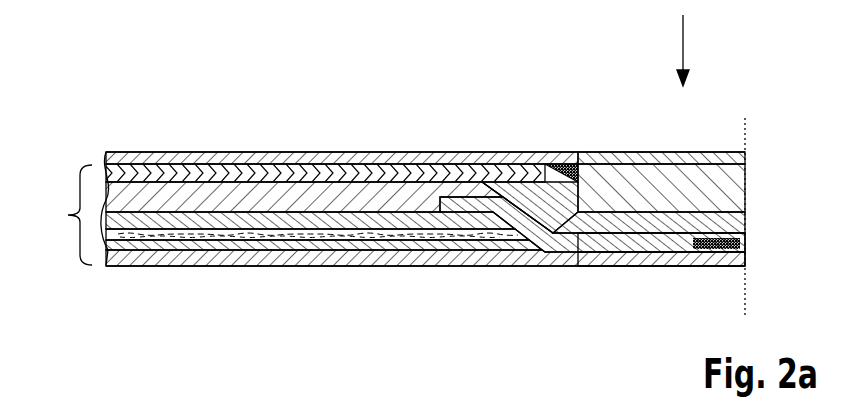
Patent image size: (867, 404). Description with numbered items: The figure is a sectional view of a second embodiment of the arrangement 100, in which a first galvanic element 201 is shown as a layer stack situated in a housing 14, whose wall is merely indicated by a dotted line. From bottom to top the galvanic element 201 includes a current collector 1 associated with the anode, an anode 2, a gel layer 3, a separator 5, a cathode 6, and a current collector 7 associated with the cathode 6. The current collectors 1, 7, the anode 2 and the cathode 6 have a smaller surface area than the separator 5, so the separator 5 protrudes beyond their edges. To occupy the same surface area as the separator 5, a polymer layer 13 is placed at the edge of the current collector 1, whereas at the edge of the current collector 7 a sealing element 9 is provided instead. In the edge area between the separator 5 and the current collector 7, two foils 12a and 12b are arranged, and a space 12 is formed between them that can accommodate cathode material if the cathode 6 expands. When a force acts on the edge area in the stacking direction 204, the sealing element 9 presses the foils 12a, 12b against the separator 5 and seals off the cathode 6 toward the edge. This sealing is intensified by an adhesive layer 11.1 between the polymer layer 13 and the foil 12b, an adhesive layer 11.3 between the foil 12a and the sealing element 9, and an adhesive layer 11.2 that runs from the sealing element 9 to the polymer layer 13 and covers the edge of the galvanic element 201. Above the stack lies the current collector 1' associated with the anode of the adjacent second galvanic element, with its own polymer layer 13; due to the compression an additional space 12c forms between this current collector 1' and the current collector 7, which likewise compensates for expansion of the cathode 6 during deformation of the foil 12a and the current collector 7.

The arrangement 100 is at (176, 80).
The current collector associated with the anode 1 is at (425, 283).
The current collector associated with the anode of the second galvanic element 1' is at (342, 127).
The anode 2 is at (298, 250).
The gel layer 3 is at (345, 240).
The separator 5 is at (445, 230).
The cathode 6 is at (178, 200).
The current collector associated with the cathode 7 is at (188, 182).
The sealing element 9 is at (745, 178).
The adhesive layer 11.1 is at (745, 255).
The adhesive layer 11.2 is at (745, 233).
The adhesive layer 11.3 is at (745, 210).
The space 12 is at (455, 194).
The foil 12a is at (508, 187).
The foil 12b is at (532, 192).
The additional space 12c is at (562, 168).
The polymer layer 13 is at (682, 150).
The housing 14 is at (756, 119).
The first galvanic element 201 is at (57, 215).
The stacking direction 204 is at (683, 40).